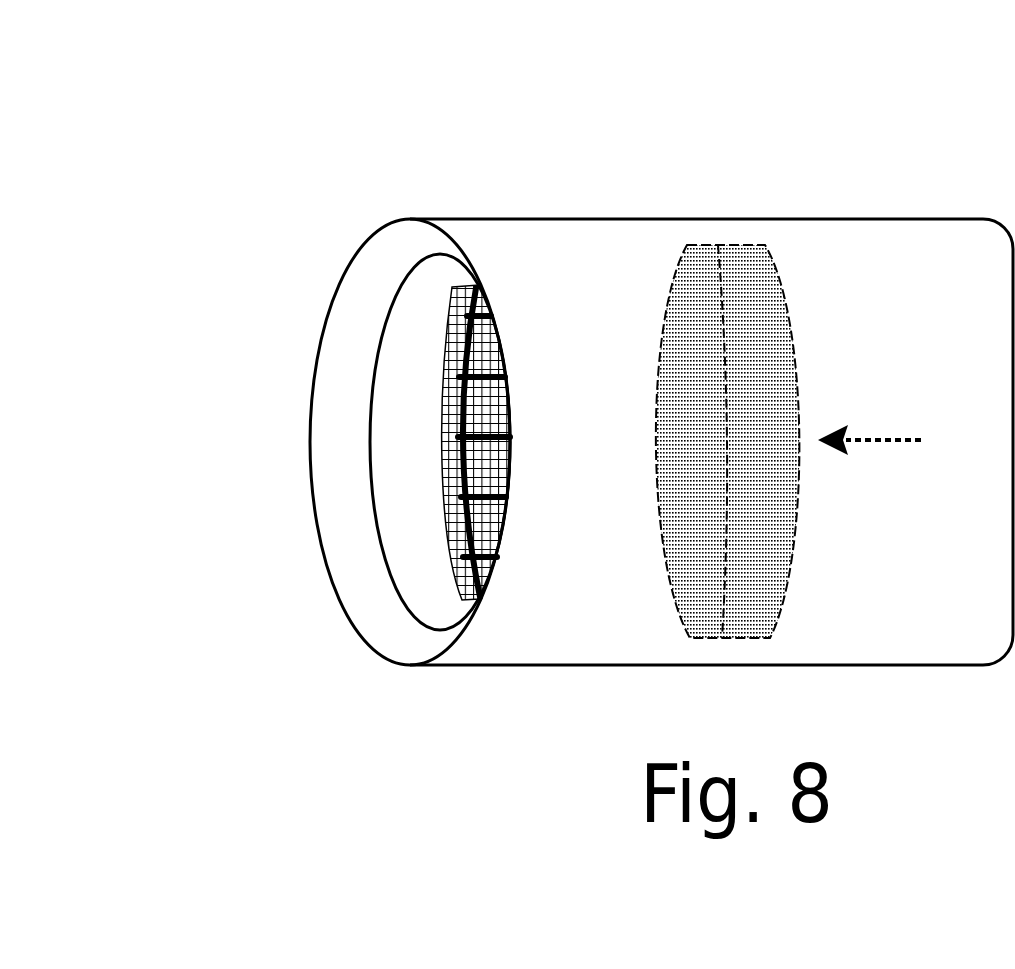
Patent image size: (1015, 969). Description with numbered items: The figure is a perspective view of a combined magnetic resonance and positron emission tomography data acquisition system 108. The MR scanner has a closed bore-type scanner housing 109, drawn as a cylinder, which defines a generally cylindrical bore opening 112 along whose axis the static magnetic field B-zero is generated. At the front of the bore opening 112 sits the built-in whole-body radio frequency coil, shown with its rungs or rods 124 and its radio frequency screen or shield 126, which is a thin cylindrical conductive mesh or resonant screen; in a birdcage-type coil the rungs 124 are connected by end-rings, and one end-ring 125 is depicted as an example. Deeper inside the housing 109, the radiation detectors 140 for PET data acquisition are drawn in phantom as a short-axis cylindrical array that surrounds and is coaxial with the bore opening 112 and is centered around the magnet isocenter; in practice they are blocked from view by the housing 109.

The combined magnetic resonance and positron emission tomography data acquisition sy 108 is at (263, 92).
The closed bore-type scanner housing 109 is at (748, 222).
The bore opening 112 is at (399, 458).
The rungs or rods 124 is at (478, 493).
The end-ring 125 is at (457, 343).
The radio frequency screen or shield 126 is at (447, 522).
The radiation detectors 140 is at (750, 303).